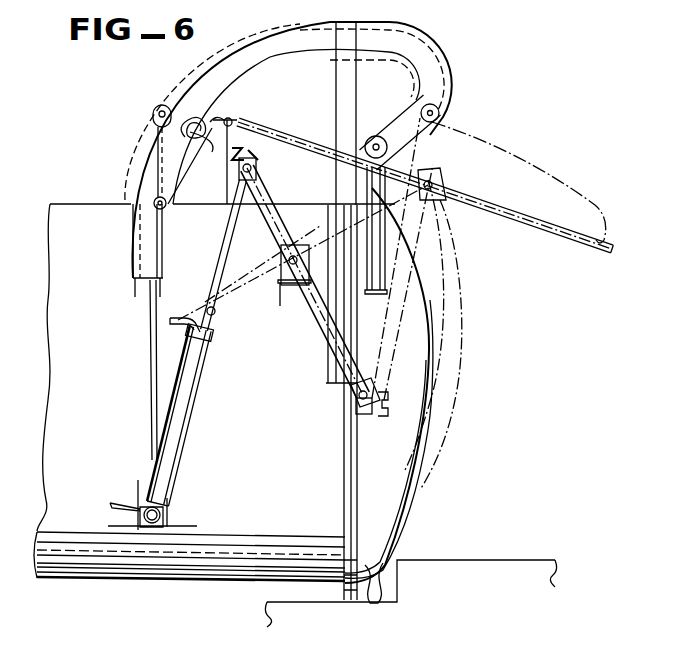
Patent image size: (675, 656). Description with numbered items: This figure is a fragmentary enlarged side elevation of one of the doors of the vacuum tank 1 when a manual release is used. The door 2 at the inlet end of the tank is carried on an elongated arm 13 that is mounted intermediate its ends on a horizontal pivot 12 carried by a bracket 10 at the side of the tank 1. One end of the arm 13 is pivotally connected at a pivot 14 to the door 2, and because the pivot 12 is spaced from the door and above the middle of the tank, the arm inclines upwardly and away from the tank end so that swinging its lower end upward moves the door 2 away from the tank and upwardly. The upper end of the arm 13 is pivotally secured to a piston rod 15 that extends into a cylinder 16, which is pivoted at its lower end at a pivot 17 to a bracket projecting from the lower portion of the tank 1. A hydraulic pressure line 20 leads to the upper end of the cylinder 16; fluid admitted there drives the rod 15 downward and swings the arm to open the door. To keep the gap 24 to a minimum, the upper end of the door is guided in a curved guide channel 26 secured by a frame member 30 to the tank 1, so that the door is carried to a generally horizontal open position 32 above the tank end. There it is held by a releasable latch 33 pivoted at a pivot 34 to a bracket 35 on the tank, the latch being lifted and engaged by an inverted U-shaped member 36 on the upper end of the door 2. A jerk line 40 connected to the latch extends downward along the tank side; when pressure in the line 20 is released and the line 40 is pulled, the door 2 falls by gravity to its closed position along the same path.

The vacuum tank 1 is at (83, 199).
The door 2 is at (420, 442).
The bracket 10 is at (277, 295).
The pivot 12 is at (307, 233).
The arm 13 is at (322, 318).
The pivot 14 is at (350, 400).
The piston rod 15 is at (220, 258).
The cylinder 16 is at (187, 435).
The pivot 17 is at (165, 512).
The hydraulic pressure line 20 is at (178, 312).
The gap 24 is at (373, 603).
The guide channel 26 is at (283, 63).
The frame member 30 is at (337, 182).
The open position 32 is at (500, 147).
The latch 33 is at (233, 110).
The pivot 34 is at (213, 166).
The bracket 35 is at (222, 196).
The inverted U-shaped member 36 is at (237, 120).
The jerk line 40 is at (152, 348).